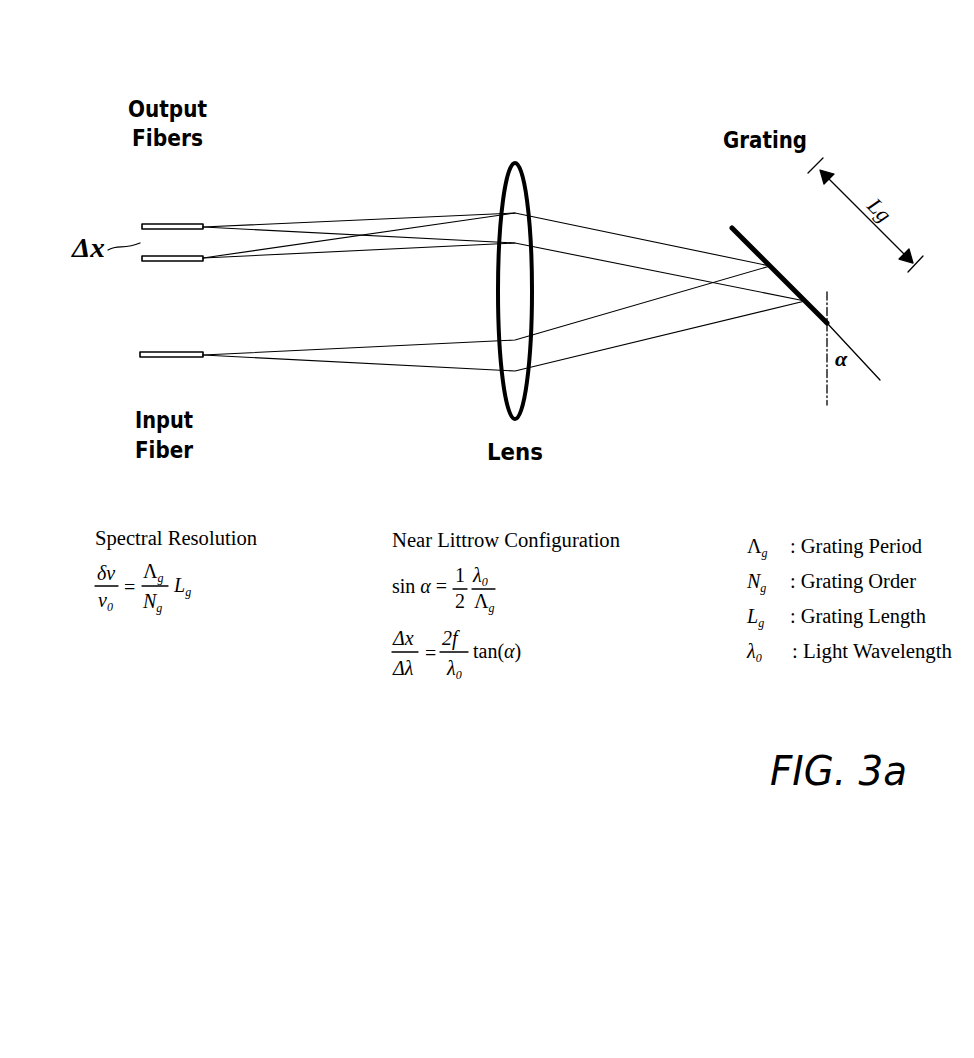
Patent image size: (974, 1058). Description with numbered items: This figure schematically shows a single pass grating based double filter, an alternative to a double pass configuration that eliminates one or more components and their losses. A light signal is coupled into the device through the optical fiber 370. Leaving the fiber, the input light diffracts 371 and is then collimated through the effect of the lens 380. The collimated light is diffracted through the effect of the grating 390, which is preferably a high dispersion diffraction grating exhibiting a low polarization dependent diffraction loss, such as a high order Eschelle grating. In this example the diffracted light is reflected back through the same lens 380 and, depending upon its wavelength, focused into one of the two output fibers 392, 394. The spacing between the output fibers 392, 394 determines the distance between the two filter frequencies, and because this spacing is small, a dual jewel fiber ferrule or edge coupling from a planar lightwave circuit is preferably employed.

The optical fiber 370 is at (180, 358).
The diffracting input light 371 is at (445, 356).
The lens 380 is at (512, 176).
The grating 390 is at (738, 230).
The output fiber 392 is at (182, 262).
The output fiber 394 is at (166, 224).